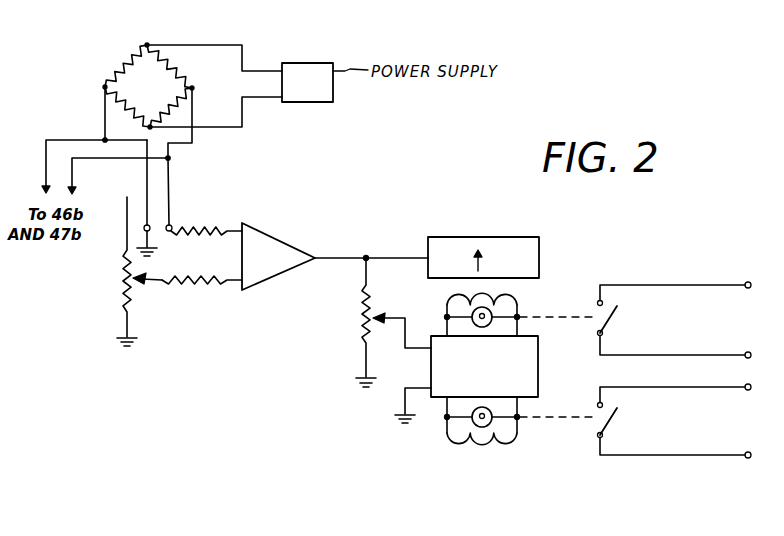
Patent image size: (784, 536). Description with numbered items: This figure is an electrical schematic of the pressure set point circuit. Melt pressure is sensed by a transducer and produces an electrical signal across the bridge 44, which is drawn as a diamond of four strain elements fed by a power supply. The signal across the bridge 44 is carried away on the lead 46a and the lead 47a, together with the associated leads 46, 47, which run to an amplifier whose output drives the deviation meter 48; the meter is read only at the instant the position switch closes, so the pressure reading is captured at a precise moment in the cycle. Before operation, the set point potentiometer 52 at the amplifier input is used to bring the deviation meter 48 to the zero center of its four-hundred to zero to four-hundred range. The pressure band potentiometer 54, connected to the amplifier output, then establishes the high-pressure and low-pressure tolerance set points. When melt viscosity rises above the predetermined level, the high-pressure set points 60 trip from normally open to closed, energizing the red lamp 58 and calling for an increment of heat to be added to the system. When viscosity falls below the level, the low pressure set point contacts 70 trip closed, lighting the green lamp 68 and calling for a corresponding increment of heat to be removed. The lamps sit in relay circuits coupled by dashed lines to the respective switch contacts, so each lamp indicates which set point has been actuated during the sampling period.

The bridge 44 is at (123, 62).
The potentiometer 46 is at (140, 190).
The lead 46a is at (99, 160).
The bridge output lead 47 is at (172, 188).
The lead 47a is at (67, 137).
The deviation meter 48 is at (495, 237).
The set point potentiometer 52 is at (284, 238).
The pressure band potentiometer 54 is at (364, 331).
The red lamp 58 is at (482, 328).
The high-pressure set points 60 is at (609, 318).
The green lamp 68 is at (494, 377).
The low pressure set point contacts 70 is at (610, 419).